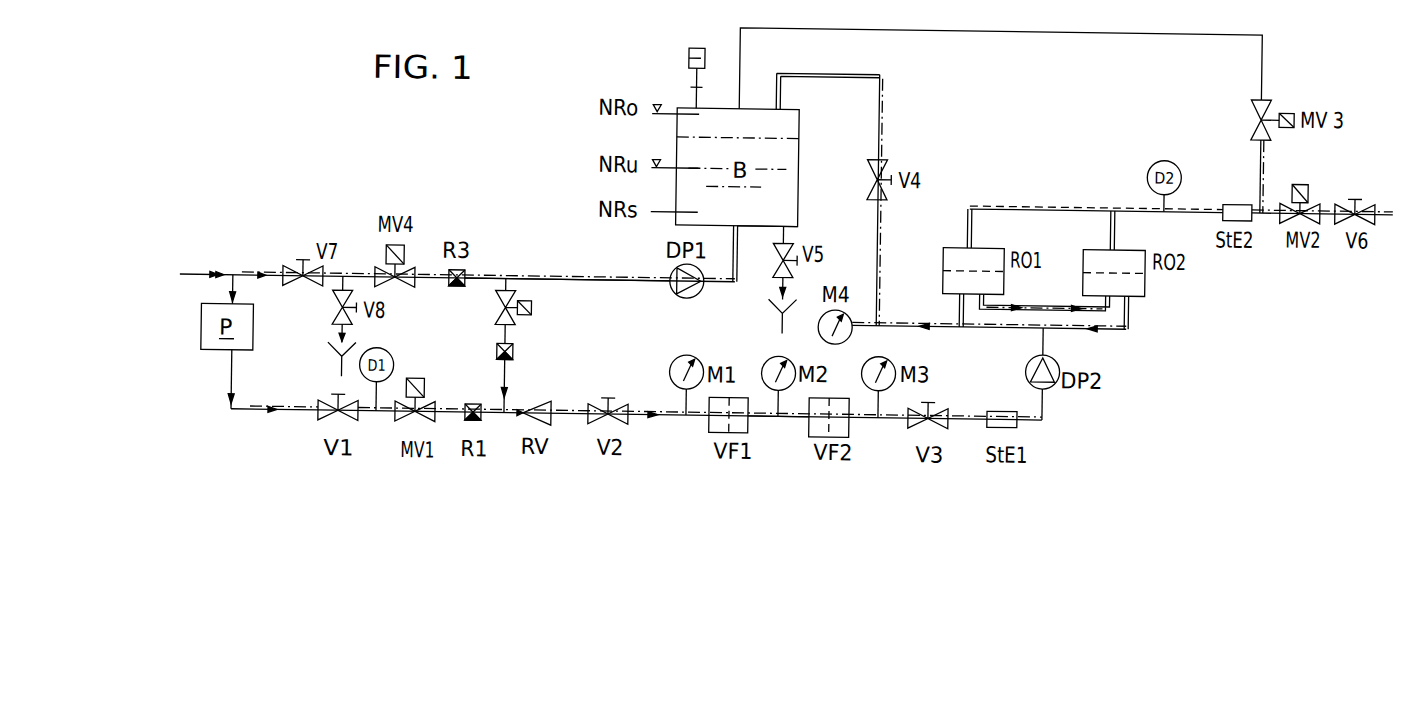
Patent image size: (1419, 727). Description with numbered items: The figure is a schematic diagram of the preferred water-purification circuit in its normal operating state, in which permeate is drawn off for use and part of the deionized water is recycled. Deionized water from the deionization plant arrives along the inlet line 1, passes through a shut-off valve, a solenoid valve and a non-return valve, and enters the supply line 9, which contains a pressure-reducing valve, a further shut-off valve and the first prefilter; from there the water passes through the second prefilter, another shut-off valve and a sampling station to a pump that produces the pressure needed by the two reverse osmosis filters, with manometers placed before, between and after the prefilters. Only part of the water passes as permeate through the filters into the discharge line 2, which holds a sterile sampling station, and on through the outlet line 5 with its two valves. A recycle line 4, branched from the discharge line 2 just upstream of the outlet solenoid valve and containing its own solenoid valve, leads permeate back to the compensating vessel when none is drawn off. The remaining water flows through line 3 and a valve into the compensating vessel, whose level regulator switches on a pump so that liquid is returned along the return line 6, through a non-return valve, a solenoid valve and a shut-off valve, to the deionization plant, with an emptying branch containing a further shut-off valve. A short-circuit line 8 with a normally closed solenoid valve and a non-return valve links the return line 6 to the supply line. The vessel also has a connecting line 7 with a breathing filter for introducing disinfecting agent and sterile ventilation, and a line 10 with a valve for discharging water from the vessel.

The inlet line 1 is at (295, 404).
The discharge line 2 is at (1059, 196).
The line 3 is at (964, 320).
The recycle line 4 is at (1257, 61).
The outlet line 5 is at (1268, 203).
The return line 6 is at (575, 273).
The connecting line 7 is at (686, 90).
The short-circuit line 8 is at (505, 368).
The supply line 9 is at (768, 413).
The line 10 is at (795, 222).